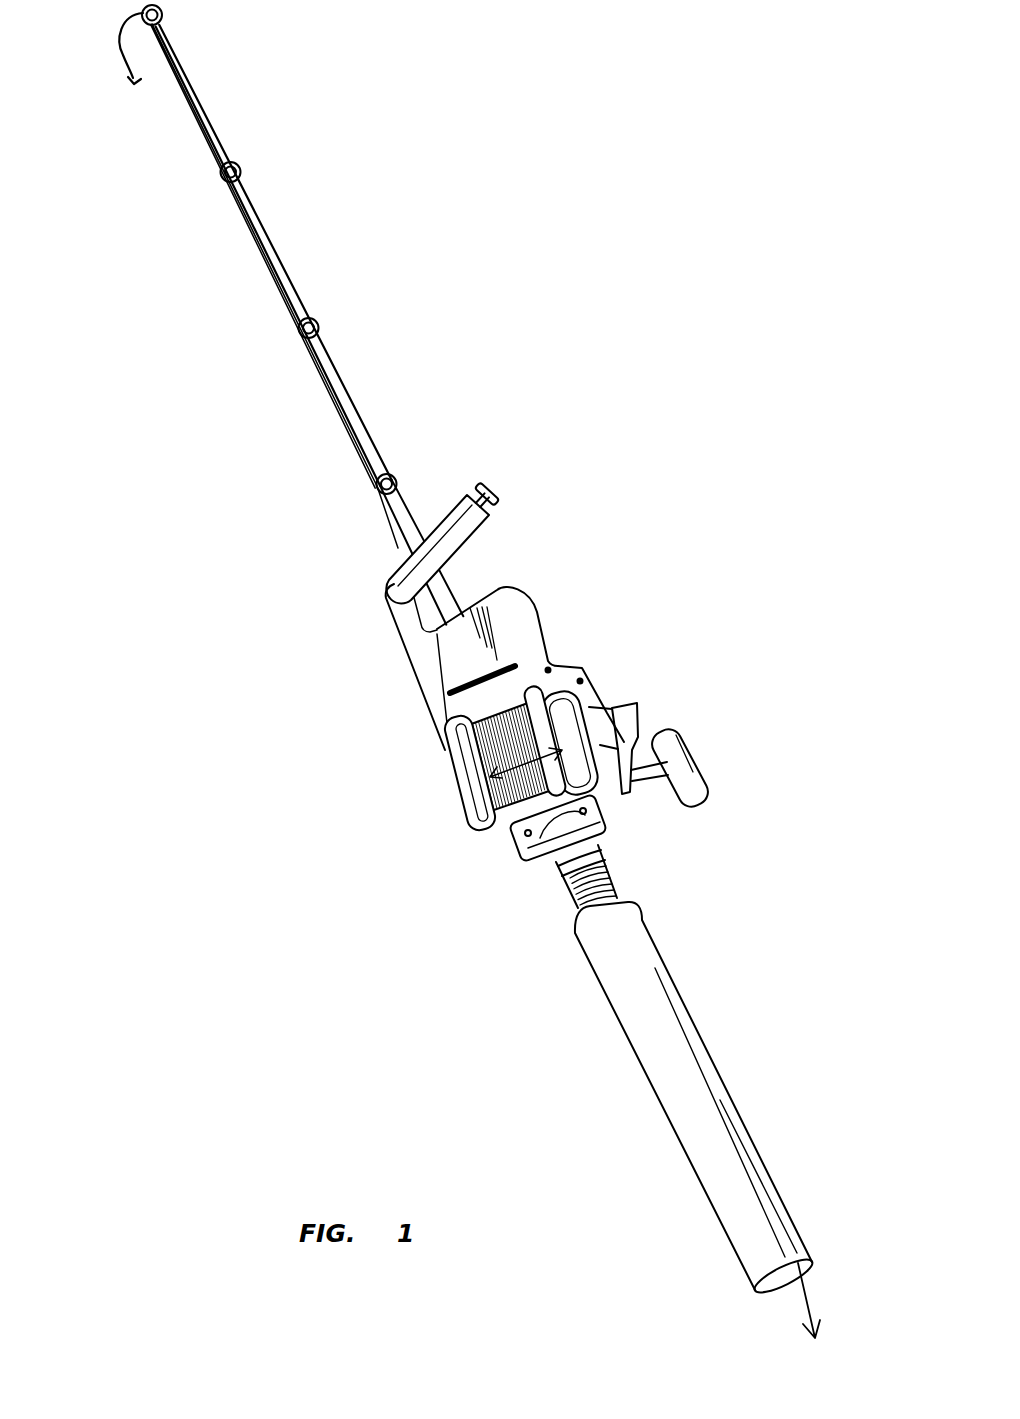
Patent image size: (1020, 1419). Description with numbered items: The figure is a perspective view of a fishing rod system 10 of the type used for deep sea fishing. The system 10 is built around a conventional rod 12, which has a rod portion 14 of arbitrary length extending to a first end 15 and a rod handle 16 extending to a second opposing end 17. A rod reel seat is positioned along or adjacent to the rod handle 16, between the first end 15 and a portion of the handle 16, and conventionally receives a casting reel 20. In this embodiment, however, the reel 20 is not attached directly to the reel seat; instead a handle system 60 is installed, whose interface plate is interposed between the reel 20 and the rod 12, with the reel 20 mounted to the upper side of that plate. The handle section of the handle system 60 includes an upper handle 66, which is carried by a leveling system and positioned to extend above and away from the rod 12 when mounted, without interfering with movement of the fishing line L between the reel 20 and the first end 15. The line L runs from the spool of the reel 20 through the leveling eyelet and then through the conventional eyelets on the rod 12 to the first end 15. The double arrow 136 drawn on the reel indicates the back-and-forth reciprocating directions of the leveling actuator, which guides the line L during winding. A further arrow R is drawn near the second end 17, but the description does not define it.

The fishing rod system 10 is at (652, 256).
The rod 12 is at (737, 1113).
The rod portion 14 is at (360, 408).
The first end 15 is at (193, 25).
The rod handle 16 is at (680, 995).
The second opposing end 17 is at (839, 1257).
The casting reel 20 is at (470, 798).
The handle system 60 is at (412, 674).
The upper handle 66 is at (501, 531).
The double arrow 136 is at (523, 760).
The fishing line L is at (413, 612).
The rotation direction R is at (800, 1303).